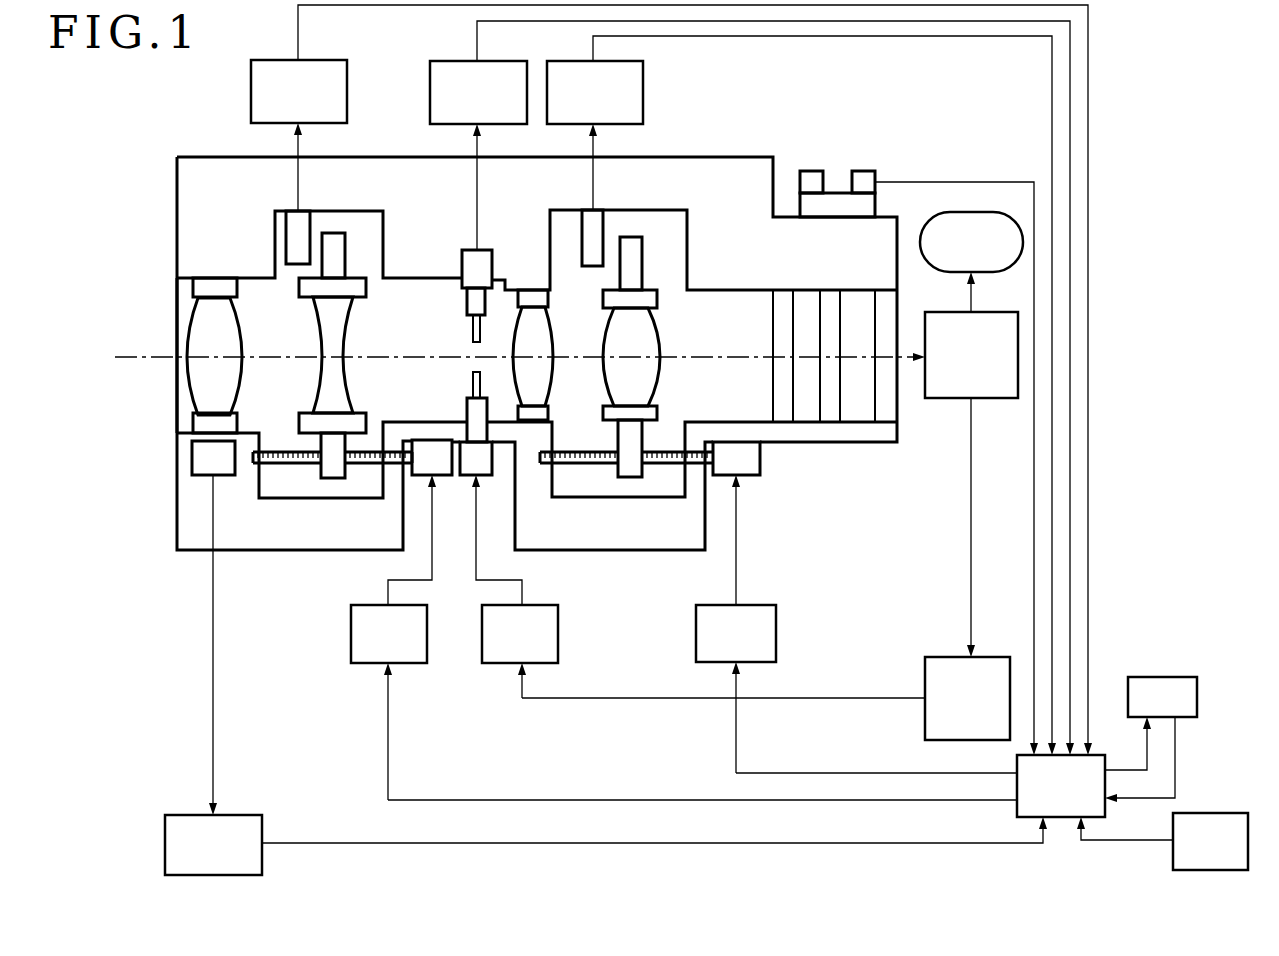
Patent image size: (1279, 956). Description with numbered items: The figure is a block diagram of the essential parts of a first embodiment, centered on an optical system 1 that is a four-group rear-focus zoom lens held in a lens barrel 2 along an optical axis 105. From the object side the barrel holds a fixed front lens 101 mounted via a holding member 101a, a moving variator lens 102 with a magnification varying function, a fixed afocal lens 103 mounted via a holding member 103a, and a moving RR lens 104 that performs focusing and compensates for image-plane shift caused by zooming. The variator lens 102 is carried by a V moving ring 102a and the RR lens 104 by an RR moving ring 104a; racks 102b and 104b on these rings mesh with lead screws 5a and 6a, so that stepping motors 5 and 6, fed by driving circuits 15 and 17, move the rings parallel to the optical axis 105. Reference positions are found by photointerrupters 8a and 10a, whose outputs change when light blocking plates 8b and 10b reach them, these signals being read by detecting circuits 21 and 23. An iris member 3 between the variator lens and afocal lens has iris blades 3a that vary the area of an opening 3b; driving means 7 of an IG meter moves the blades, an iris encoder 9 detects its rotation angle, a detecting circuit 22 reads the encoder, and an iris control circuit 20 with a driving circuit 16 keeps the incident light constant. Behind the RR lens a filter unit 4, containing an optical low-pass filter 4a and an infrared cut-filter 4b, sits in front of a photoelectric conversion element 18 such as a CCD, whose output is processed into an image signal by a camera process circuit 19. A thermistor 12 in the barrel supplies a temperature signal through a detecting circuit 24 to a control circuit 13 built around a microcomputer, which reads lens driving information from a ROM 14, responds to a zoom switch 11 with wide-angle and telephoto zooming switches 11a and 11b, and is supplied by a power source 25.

The optical system 1 is at (188, 305).
The lens barrel 2 is at (185, 528).
The iris member 3 is at (470, 302).
The iris blades 3a is at (472, 332).
The opening 3b is at (472, 350).
The filter unit 4 is at (821, 420).
The optical low-pass filter 4a is at (783, 410).
The infrared cut-filter 4b is at (808, 410).
The driving means 5 is at (440, 473).
The lead screw 5a is at (280, 470).
The driving means 6 is at (745, 473).
The lead screw 6a is at (577, 470).
The driving means 7 is at (485, 473).
The photointerrupter 8a is at (292, 234).
The light blocking plate 8b is at (330, 256).
The iris encoder 9 is at (473, 262).
The photointerrupter 10a is at (590, 230).
The light blocking plate 10b is at (632, 256).
The zoom switch 11 is at (857, 206).
The zooming switch 11a is at (812, 178).
The zooming switch 11b is at (862, 178).
The thermistor 12 is at (203, 461).
The control circuit 13 is at (1097, 755).
The ROM 14 is at (1182, 677).
The driving circuit 15 is at (351, 622).
The driving circuit 16 is at (558, 618).
The driving circuit 17 is at (776, 615).
The photoelectric conversion element 18 is at (886, 410).
The camera process circuit 19 is at (1004, 400).
The iris control circuit 20 is at (933, 657).
The detecting circuit 21 is at (251, 108).
The detecting circuit 22 is at (430, 108).
The detecting circuit 23 is at (643, 107).
The detecting circuit 24 is at (180, 815).
The power source 25 is at (1225, 813).
The first lens group 101 is at (226, 318).
The holding member 101a is at (230, 418).
The second lens group 102 is at (338, 318).
The V moving ring 102a is at (358, 418).
The rack 102b is at (333, 472).
The third lens group 103 is at (535, 330).
The holding member 103a is at (540, 412).
The fourth lens group 104 is at (650, 330).
The RR moving ring 104a is at (652, 412).
The rack 104b is at (630, 465).
The optical axis 105 is at (125, 360).